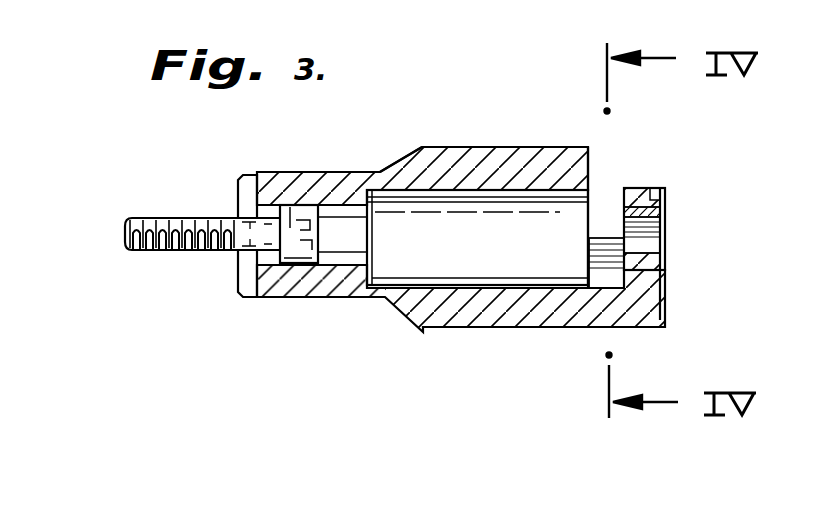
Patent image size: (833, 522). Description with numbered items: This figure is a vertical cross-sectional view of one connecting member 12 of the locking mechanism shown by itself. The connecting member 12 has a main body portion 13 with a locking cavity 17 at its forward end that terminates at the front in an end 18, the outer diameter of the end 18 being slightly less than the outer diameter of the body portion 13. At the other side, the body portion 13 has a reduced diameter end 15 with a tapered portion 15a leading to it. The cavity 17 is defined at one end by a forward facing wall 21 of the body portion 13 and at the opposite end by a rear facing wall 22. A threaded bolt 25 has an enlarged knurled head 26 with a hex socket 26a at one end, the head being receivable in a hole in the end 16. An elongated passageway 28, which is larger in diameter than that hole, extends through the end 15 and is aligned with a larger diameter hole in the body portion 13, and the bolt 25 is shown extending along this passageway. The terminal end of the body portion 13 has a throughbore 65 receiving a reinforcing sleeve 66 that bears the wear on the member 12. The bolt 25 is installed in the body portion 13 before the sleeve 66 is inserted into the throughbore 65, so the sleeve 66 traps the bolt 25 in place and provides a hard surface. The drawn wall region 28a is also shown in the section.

The connecting member 12 is at (424, 347).
The body portion 13 is at (490, 158).
The reduced diameter end 15 is at (300, 298).
The tapered portion 15a is at (422, 145).
The end 16 is at (238, 190).
The locking cavity 17 is at (611, 290).
The end 18 is at (642, 194).
The forward facing wall 21 is at (590, 157).
The rear facing wall 22 is at (607, 193).
The threaded bolt 25 is at (164, 267).
The enlarged knurled head 26 is at (300, 208).
The hex socket 26a is at (305, 239).
The elongated passageway 28 is at (341, 211).
The lower wall 28a is at (505, 278).
The throughbore 65 is at (648, 255).
The reinforcing sleeve 66 is at (662, 208).